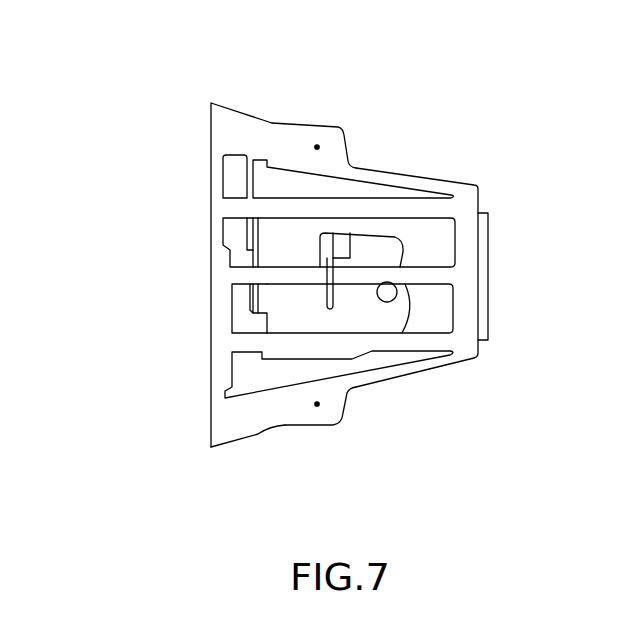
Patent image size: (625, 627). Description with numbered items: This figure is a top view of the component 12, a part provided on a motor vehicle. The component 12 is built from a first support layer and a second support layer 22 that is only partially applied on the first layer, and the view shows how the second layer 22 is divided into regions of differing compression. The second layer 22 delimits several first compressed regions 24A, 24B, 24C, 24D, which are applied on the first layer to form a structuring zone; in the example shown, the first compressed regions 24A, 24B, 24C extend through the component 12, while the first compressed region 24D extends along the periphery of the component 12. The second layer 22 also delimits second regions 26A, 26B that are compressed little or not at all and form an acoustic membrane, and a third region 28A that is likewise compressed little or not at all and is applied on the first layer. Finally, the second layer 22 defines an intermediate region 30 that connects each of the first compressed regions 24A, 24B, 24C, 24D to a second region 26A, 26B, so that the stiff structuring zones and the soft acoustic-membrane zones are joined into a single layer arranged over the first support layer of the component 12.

The component 12 is at (150, 325).
The second support layer 22 is at (283, 146).
The first compressed region 24A is at (227, 273).
The first compressed region 24B is at (233, 207).
The first compressed region 24C is at (232, 341).
The first compressed region 24D is at (243, 420).
The second region 26A is at (288, 383).
The second region 26B is at (372, 318).
The third region 28A is at (298, 226).
The intermediate region 30 is at (443, 296).